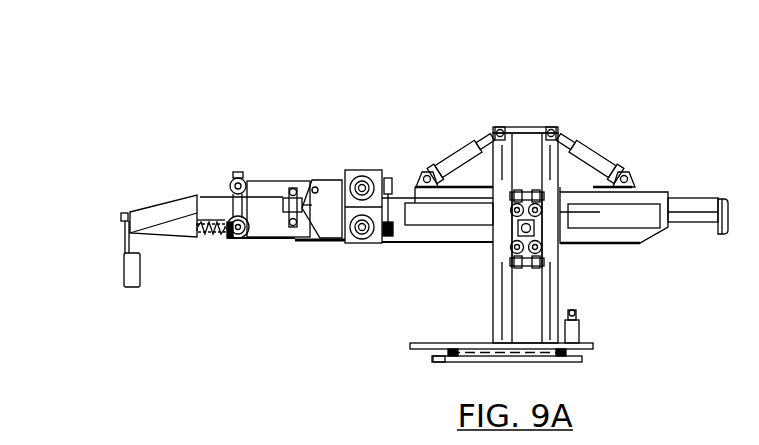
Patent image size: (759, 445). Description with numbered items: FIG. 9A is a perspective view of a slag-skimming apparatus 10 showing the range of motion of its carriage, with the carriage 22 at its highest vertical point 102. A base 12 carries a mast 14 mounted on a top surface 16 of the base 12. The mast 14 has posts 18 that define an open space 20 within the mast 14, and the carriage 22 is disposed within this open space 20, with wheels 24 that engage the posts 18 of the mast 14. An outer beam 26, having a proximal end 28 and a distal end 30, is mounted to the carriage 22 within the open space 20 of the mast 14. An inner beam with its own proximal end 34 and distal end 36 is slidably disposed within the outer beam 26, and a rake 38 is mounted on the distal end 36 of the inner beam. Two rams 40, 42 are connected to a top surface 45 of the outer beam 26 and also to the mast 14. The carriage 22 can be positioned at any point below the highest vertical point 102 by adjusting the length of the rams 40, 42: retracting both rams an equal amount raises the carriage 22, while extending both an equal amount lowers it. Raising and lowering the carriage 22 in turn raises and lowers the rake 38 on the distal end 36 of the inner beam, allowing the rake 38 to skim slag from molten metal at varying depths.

The apparatus 10 is at (203, 132).
The base 12 is at (442, 371).
The mast 14 is at (537, 112).
The top surface 16 is at (481, 343).
The posts 18 is at (501, 301).
The open space 20 is at (524, 144).
The carriage 22 is at (538, 228).
The wheels 24 is at (514, 251).
The outer beam 26 is at (415, 255).
The proximal end 28 is at (649, 237).
The distal end 30 is at (262, 243).
The proximal end 34 is at (690, 196).
The distal end 36 is at (160, 230).
The rake 38 is at (124, 268).
The ram 40 is at (456, 128).
The ram 42 is at (596, 132).
The top surface 45 is at (415, 175).
The highest vertical point 102 is at (522, 187).